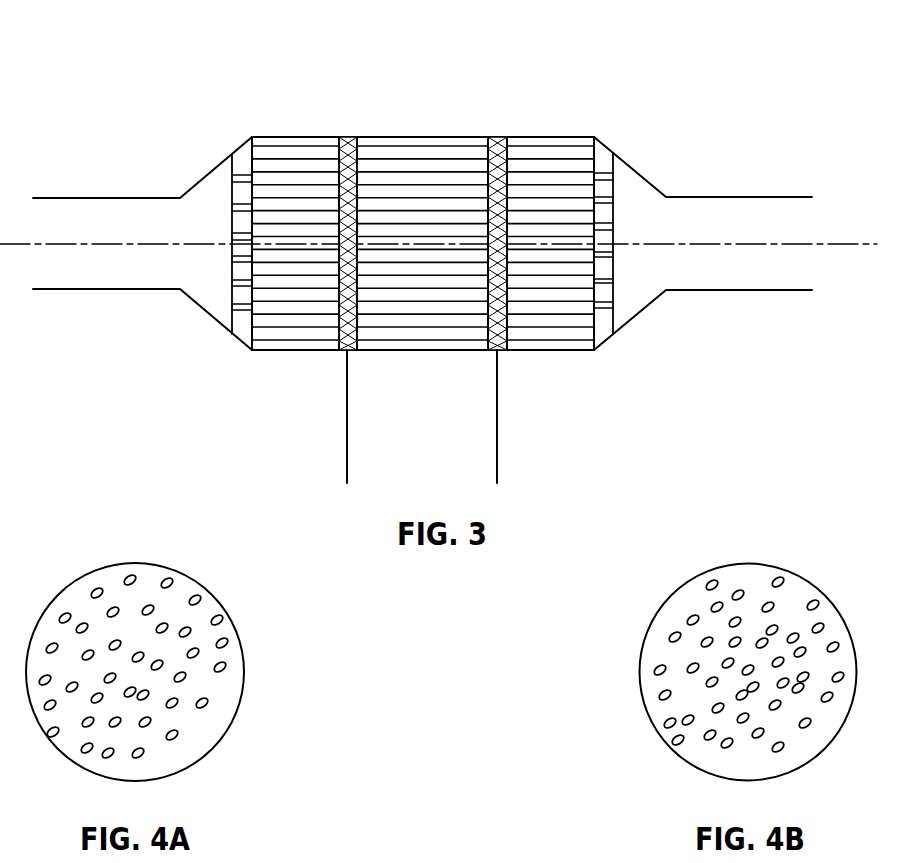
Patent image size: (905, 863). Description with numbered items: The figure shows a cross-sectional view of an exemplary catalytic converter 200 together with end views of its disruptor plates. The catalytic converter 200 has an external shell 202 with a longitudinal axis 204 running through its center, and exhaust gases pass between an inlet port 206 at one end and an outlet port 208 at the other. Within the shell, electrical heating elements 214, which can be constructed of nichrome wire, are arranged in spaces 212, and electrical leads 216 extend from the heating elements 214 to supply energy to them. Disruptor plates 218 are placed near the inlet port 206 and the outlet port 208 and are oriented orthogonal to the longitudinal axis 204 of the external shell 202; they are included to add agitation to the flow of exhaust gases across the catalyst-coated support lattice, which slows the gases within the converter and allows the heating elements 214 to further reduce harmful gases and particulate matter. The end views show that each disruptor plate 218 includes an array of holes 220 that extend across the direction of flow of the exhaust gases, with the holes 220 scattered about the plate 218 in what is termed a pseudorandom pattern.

In FIG. 3, the catalytic converter 200 is at (630, 58).
In FIG. 3, the external shell 202 is at (647, 302).
In FIG. 3, the longitudinal axis 204 is at (833, 244).
In FIG. 3, the inlet port 206 is at (692, 196).
In FIG. 3, the outlet port 208 is at (150, 196).
In FIG. 3, the spaces 212 is at (366, 124).
In FIG. 3, the electrical heating elements 214 is at (343, 137).
In FIG. 3, the electrical leads 216 is at (347, 420).
In FIG. 3, the disruptor plates 218 is at (603, 162).
In FIG. 4A, the disruptor plates 218 is at (108, 585).
In FIG. 4B, the disruptor plates 218 is at (798, 588).
In FIG. 4A, the holes 220 is at (190, 607).